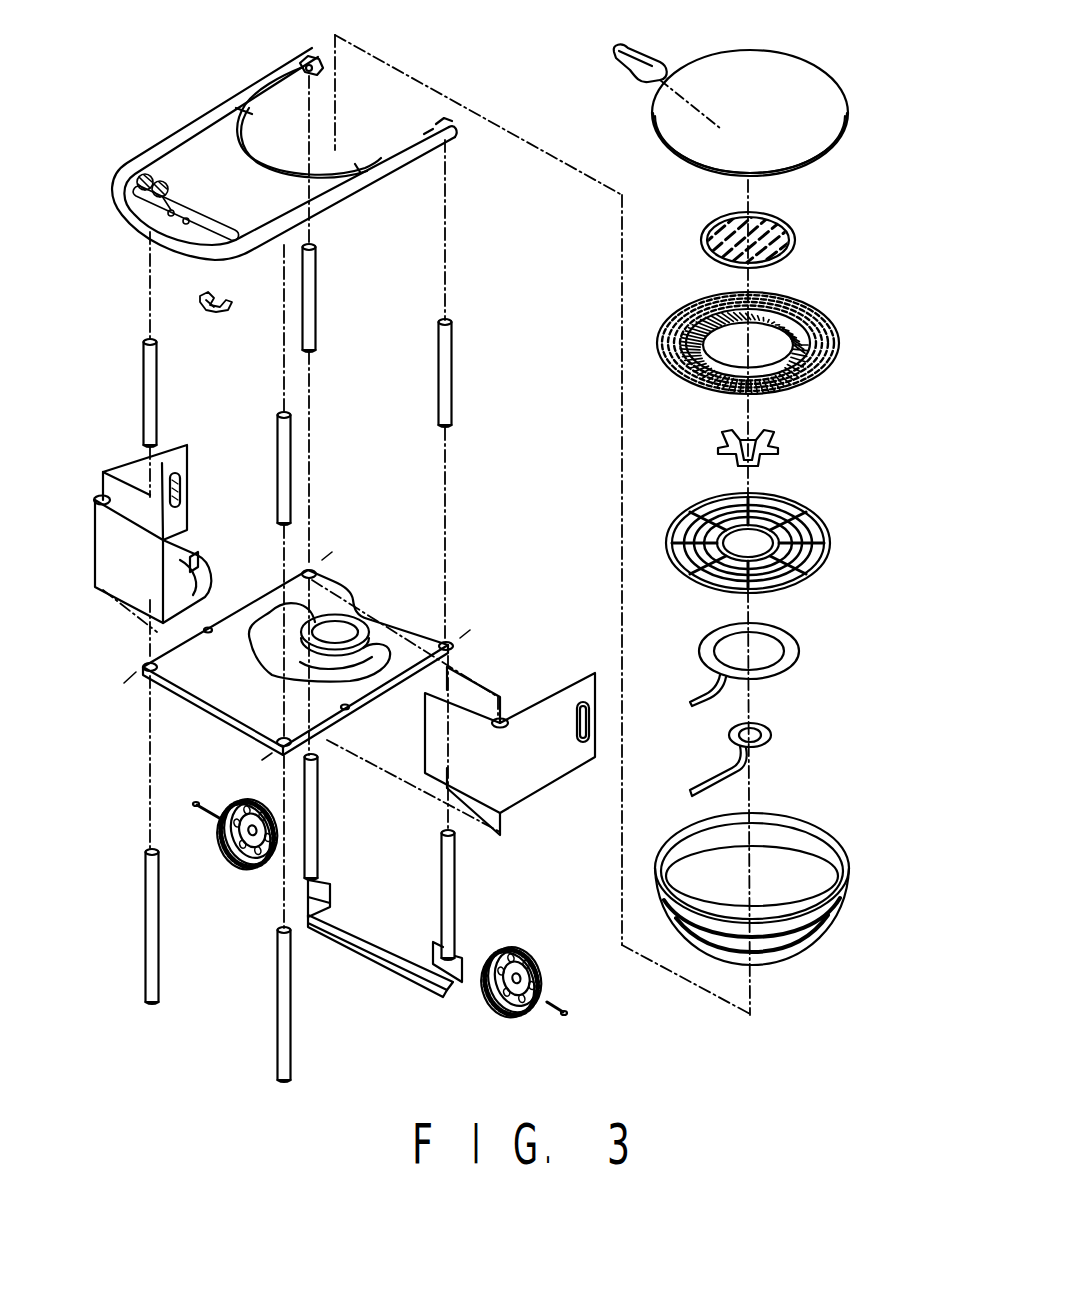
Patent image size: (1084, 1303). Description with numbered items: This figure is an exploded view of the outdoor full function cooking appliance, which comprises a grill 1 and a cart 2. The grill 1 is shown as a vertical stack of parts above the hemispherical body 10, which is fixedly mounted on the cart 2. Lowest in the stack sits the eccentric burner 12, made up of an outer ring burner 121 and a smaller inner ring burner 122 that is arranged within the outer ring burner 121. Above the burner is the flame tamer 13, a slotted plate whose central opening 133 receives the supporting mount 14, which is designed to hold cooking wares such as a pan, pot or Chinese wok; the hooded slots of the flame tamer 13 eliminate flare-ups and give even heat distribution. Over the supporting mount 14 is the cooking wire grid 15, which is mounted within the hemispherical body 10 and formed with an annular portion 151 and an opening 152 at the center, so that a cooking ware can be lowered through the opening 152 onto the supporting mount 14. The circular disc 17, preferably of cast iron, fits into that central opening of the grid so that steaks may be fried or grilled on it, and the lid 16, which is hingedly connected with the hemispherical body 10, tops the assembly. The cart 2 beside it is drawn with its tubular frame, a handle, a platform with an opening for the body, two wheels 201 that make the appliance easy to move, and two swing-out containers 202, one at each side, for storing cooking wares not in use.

The grill 1 is at (882, 461).
The cart 2 is at (127, 352).
The hemispherical body 10 is at (788, 955).
The eccentric burner 12 is at (800, 654).
The outer ring burner 121 is at (785, 637).
The inner ring burner 122 is at (760, 747).
The flame tamer 13 is at (802, 504).
The central opening 133 is at (708, 512).
The supporting mount 14 is at (777, 440).
The cooking wire grid 15 is at (804, 291).
The annular portion 151 is at (862, 322).
The opening 152 is at (723, 353).
The lid 16 is at (812, 92).
The circular disc 17 is at (790, 222).
The wheels 201 is at (233, 870).
The swing-out containers 202 is at (108, 567).